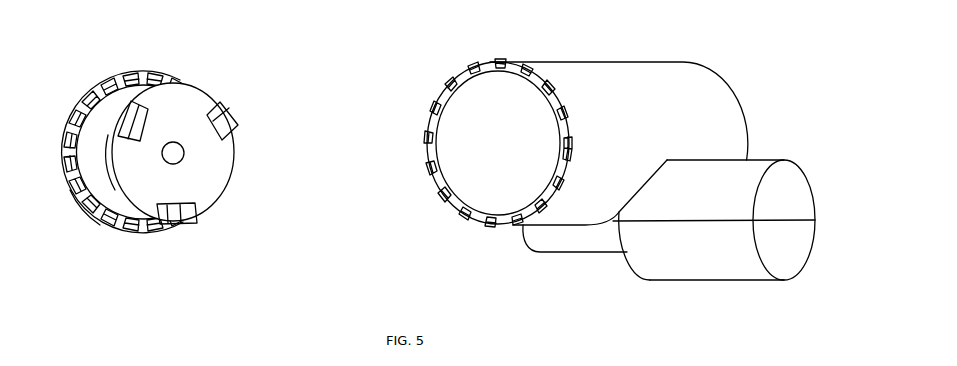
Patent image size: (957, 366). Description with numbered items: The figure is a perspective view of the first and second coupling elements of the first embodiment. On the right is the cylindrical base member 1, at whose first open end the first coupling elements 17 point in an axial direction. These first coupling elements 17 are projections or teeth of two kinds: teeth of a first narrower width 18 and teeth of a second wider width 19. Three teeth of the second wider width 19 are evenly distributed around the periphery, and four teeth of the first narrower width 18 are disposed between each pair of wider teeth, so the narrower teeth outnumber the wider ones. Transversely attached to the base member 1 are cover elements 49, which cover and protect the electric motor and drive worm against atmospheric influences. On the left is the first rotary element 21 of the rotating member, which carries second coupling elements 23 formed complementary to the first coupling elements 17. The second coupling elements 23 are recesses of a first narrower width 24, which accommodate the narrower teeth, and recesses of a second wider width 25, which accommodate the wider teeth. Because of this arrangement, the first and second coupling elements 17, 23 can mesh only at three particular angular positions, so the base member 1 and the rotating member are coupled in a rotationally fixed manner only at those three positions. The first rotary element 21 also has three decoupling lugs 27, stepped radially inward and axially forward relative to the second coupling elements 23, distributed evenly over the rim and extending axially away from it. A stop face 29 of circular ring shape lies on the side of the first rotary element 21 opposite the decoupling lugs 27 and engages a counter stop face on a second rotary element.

The cylindrical base member 1 is at (561, 144).
The first coupling elements 17 is at (457, 143).
The first width 18 is at (430, 140).
The second width 19 is at (443, 177).
The first rotary element 21 is at (224, 88).
The second coupling elements 23 is at (149, 236).
The first narrower width 24 is at (97, 219).
The second wider width 25 is at (80, 162).
The decoupling lugs 27 is at (133, 120).
The stop face 29 is at (97, 78).
The cover elements 49 is at (692, 204).